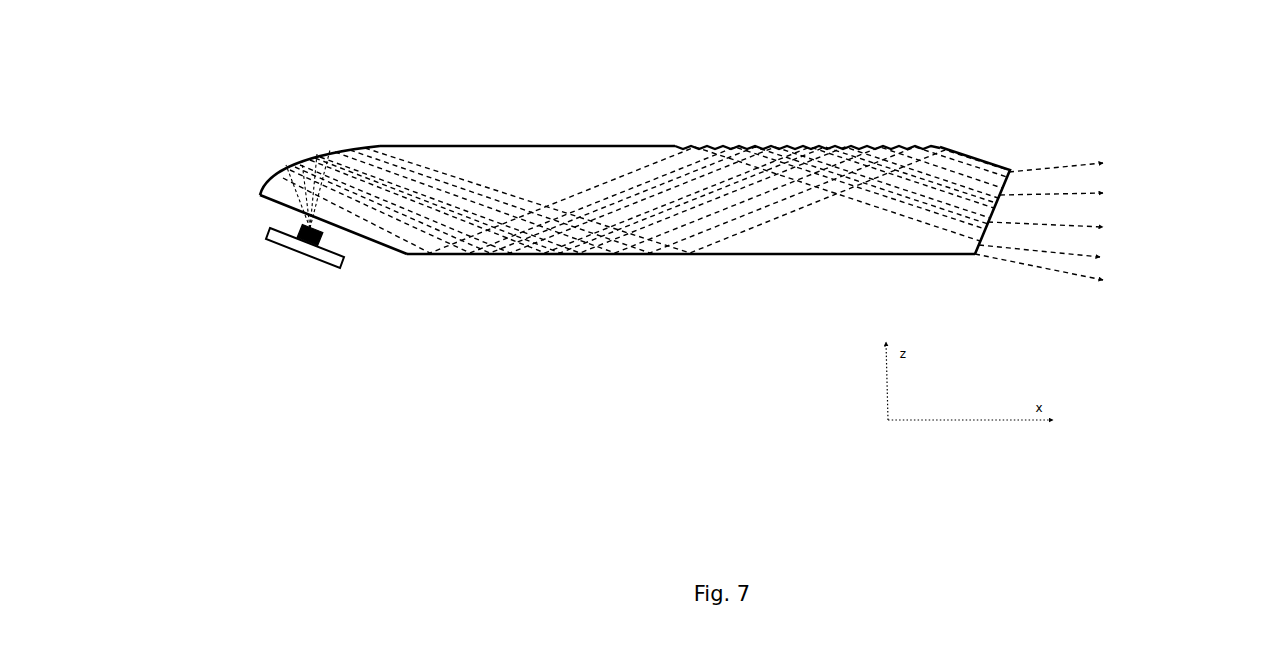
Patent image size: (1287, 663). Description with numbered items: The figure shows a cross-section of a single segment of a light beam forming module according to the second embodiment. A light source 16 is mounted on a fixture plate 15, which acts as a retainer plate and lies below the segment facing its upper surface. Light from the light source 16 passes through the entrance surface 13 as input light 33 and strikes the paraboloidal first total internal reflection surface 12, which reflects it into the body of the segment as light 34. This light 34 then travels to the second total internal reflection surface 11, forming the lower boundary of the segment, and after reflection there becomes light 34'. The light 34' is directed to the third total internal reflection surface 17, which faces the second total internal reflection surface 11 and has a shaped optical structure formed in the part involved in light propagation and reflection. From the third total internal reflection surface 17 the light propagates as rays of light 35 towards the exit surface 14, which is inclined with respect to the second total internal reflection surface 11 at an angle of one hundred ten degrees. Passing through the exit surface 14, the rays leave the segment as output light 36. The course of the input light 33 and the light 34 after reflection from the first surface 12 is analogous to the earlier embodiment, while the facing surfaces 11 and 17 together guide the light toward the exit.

The second total internal reflection surface 11 is at (621, 260).
The first total internal reflection surface 12 is at (253, 173).
The entrance surface 13 is at (253, 210).
The exit surface 14 is at (1016, 186).
The fixture plate 15 is at (280, 257).
The light source 16 is at (330, 242).
The third total internal reflection surface 17 is at (773, 142).
The input light 33 is at (377, 147).
The light after reflection from the first surface 34 is at (476, 136).
The light after reflection from the second surface 34' is at (625, 132).
The rays of light 35 is at (845, 205).
The output light 36 is at (1123, 164).